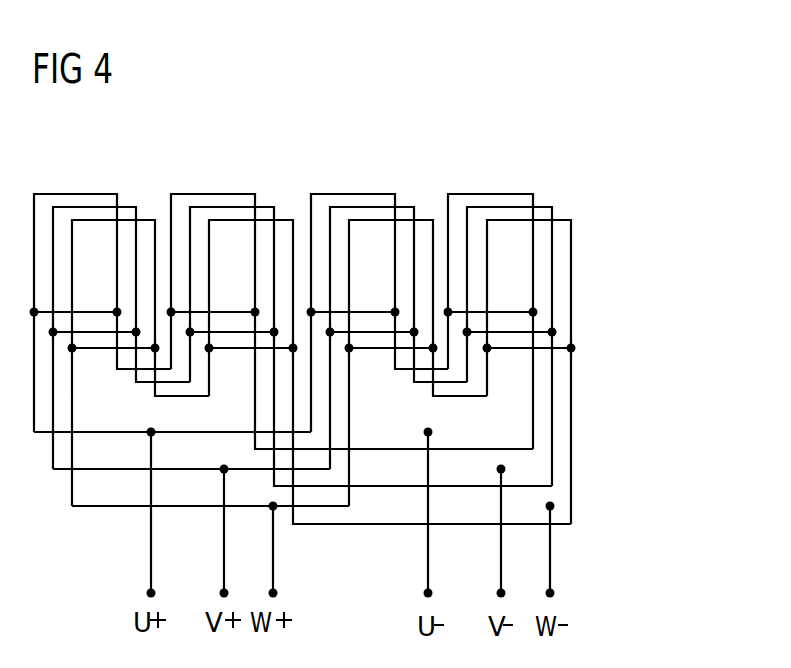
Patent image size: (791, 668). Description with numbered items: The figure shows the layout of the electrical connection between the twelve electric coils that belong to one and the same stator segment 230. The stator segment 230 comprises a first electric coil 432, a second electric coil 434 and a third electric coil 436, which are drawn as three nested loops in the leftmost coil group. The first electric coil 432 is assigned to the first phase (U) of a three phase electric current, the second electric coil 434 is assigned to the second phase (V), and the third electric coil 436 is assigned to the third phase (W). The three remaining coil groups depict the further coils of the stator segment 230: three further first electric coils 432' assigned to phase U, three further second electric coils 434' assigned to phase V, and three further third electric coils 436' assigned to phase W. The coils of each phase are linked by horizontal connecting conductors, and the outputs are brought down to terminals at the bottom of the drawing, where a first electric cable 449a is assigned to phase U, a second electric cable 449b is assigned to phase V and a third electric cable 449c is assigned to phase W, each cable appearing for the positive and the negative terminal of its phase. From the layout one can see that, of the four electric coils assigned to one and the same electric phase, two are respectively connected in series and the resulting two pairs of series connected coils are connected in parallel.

The stator segment 230 is at (640, 215).
The first electric coil 432 is at (171, 282).
The second electric coil 434 is at (190, 296).
The third electric coil 436 is at (209, 319).
The further first electric coil 432' is at (352, 290).
The further second electric coil 434' is at (371, 303).
The further third electric coil 436' is at (398, 328).
The first electric cable 449a is at (151, 535).
The second electric cable 449b is at (224, 536).
The third electric cable 449c is at (273, 570).